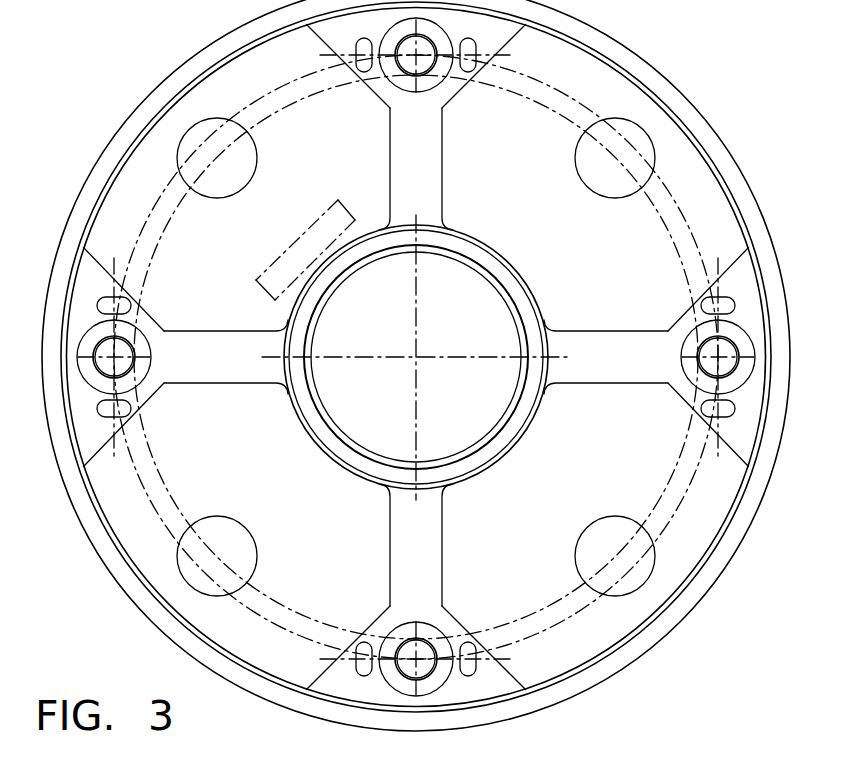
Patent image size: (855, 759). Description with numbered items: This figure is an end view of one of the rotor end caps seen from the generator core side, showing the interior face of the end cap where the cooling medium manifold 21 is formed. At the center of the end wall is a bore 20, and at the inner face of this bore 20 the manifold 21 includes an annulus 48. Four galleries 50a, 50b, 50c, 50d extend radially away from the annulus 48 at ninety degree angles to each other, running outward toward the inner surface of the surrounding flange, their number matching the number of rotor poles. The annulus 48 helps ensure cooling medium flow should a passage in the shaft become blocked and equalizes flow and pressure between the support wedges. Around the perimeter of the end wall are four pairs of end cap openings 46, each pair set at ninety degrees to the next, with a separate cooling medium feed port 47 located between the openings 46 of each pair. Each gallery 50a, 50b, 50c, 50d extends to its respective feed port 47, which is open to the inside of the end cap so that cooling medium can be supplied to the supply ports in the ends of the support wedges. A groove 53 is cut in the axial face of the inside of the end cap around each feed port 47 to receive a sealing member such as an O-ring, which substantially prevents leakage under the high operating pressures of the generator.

The bore 20 is at (471, 412).
The manifold 21 is at (527, 278).
The end cap openings 46 is at (356, 58).
The cooling medium feed port 47 is at (436, 58).
The annulus 48 is at (345, 471).
The gallery 50a is at (238, 385).
The gallery 50b is at (592, 385).
The gallery 50c is at (443, 549).
The gallery 50d is at (443, 168).
The groove 53 is at (384, 45).